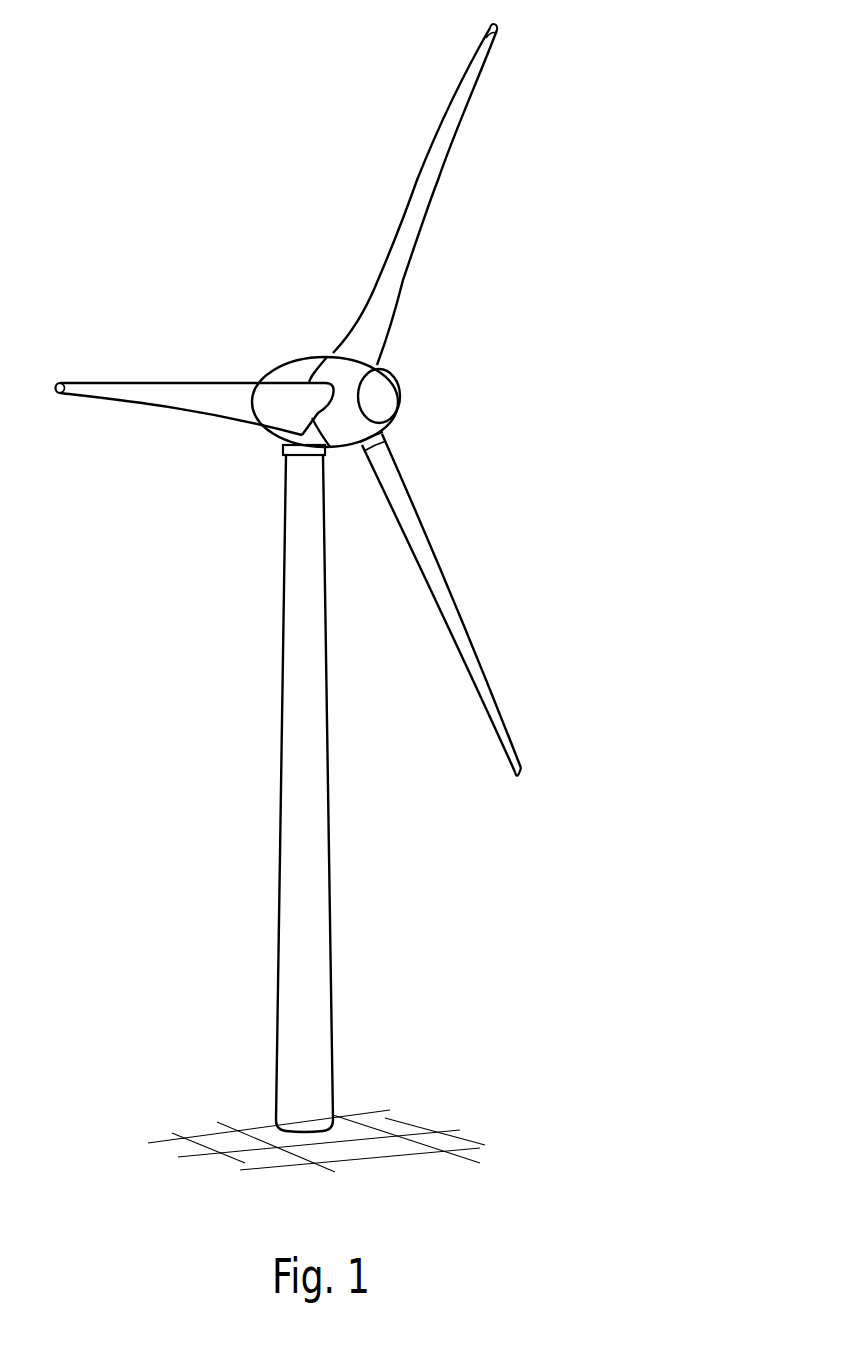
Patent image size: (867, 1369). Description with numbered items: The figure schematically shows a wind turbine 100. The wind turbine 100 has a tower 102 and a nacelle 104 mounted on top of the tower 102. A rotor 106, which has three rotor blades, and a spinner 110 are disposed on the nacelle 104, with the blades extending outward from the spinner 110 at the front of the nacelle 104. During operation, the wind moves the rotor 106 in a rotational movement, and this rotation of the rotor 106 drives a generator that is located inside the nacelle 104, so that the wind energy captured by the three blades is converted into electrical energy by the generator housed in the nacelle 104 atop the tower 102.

The wind turbine 100 is at (223, 528).
The tower 102 is at (322, 881).
The nacelle 104 is at (288, 373).
The rotor 106 is at (612, 232).
The spinner 110 is at (388, 398).